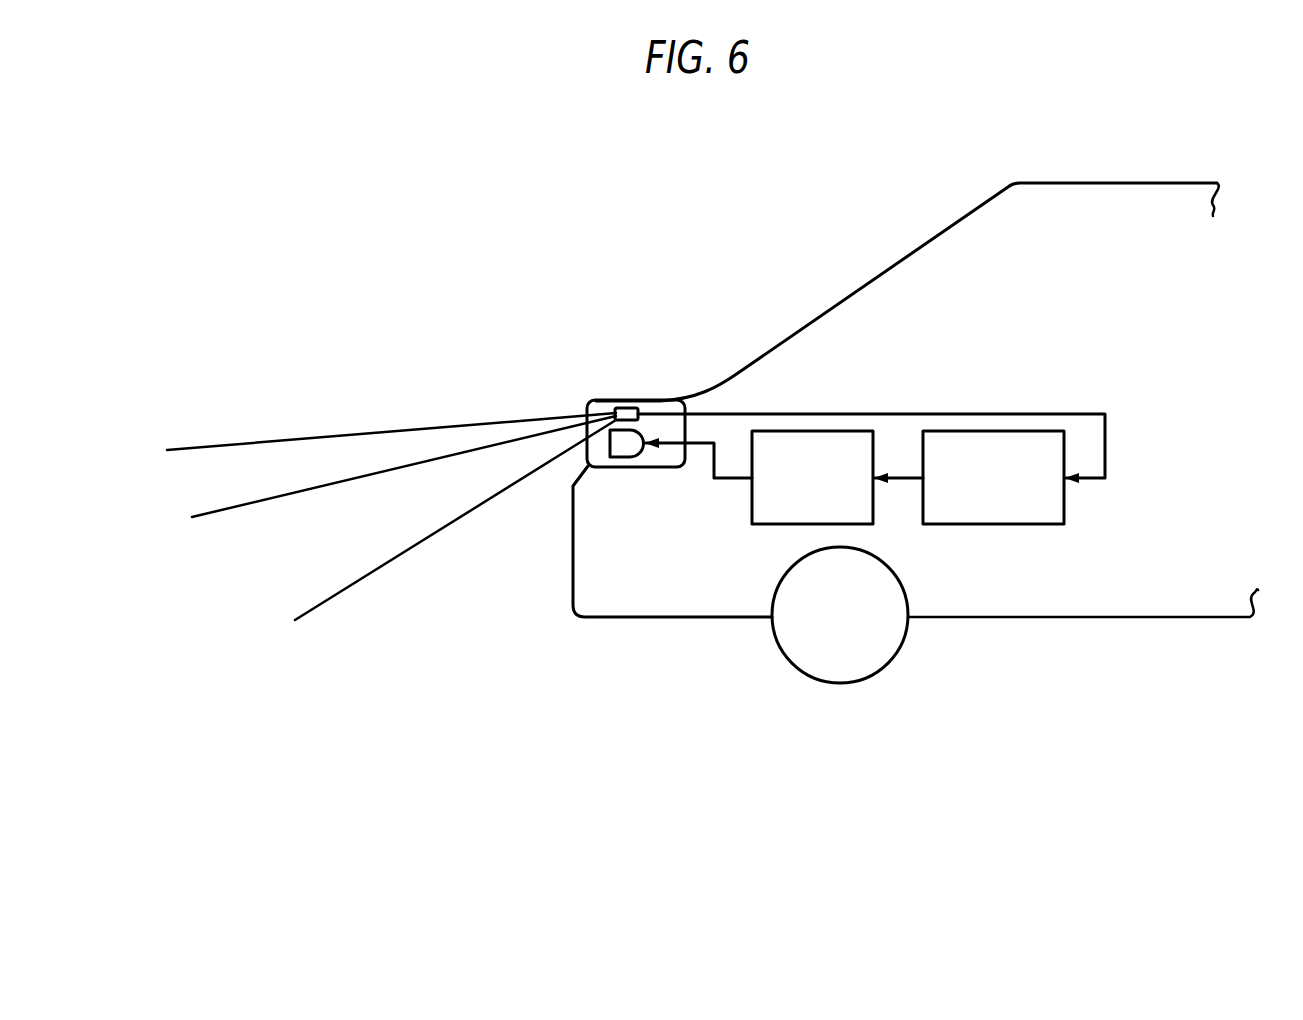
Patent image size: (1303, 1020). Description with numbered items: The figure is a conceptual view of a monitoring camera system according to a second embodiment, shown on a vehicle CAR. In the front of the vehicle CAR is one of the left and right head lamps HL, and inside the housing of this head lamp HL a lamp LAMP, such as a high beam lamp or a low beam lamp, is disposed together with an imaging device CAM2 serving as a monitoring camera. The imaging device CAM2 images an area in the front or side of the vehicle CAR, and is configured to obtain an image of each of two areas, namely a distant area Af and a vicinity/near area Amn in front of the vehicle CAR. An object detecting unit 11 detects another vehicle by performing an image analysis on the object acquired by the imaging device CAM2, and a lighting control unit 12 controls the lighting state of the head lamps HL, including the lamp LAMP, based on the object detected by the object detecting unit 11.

The vehicle CAR is at (1073, 183).
The head lamp HL is at (665, 400).
The imaging device CAM2 is at (622, 408).
The lamp LAMP is at (630, 457).
The distant area Af is at (192, 518).
The vicinity/near area Amn is at (289, 622).
The lighting control unit 12 is at (778, 525).
The object detecting unit 11 is at (1005, 524).